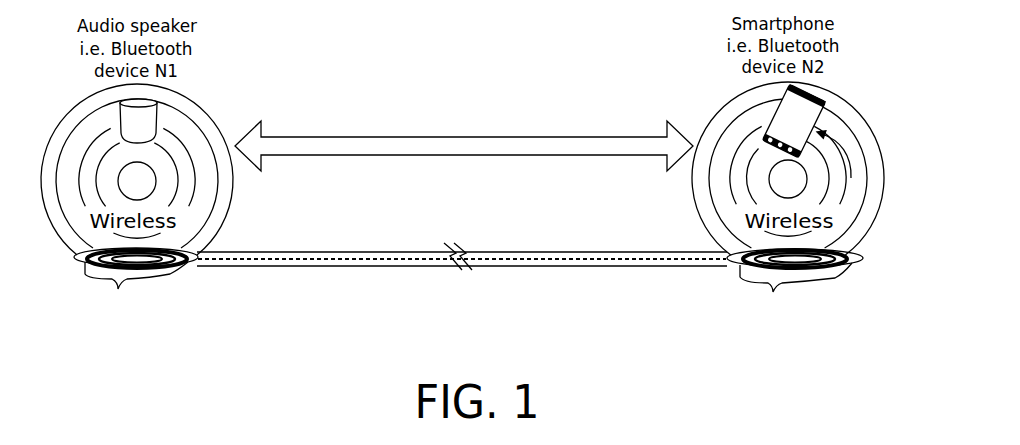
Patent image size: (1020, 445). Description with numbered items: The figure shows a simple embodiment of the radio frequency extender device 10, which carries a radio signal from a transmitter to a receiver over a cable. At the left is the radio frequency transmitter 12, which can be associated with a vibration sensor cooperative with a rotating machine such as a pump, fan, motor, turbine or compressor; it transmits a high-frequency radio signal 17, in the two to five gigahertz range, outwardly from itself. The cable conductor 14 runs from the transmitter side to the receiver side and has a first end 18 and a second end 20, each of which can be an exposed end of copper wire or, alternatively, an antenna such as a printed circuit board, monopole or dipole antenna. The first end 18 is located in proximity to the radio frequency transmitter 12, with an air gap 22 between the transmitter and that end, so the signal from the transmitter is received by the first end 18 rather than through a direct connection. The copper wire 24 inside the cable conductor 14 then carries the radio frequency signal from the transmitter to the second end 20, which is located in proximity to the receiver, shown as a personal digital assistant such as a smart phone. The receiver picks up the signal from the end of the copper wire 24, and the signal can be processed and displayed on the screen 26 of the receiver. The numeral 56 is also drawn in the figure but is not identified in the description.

The radio frequency extender device 10 is at (462, 226).
The radio frequency transmitter 12 is at (143, 122).
The cable conductor 14 is at (331, 261).
The high-frequency radio signal 17 is at (230, 208).
The first end 18 is at (180, 270).
The second end 20 is at (742, 270).
The air gap 22 is at (165, 184).
The copper wire 24 is at (538, 261).
The screen 26 is at (784, 122).
The smartphone display edge 56 is at (815, 89).